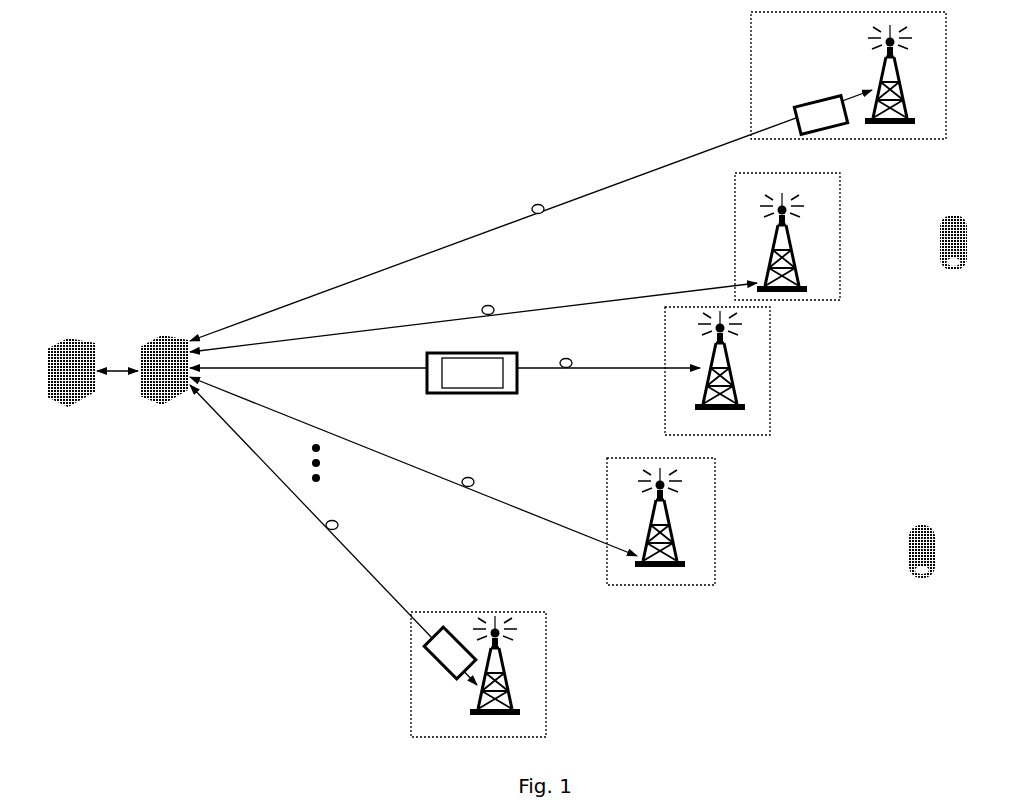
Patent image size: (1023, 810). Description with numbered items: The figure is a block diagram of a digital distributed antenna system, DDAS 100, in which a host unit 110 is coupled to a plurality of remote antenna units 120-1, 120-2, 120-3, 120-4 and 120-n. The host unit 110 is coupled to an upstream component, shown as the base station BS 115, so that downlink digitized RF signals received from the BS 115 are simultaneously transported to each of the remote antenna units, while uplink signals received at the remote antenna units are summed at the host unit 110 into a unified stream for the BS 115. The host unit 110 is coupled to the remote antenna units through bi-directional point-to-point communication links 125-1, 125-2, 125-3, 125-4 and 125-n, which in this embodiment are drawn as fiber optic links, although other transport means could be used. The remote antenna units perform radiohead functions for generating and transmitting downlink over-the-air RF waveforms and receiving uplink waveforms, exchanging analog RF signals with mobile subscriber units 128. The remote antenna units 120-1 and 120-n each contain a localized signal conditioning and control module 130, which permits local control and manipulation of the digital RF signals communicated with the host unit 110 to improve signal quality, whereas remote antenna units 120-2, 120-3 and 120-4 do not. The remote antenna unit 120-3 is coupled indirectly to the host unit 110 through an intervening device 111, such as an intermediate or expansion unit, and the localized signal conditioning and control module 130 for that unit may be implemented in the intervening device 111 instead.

The DDAS 100 is at (115, 200).
The host unit 110 is at (169, 338).
The intervening device 111 is at (473, 394).
The BS 115 is at (78, 338).
The remote antenna unit 120-1 is at (750, 73).
The remote antenna unit 120-2 is at (843, 238).
The remote antenna unit 120-3 is at (772, 368).
The remote antenna unit 120-4 is at (718, 520).
The remote antenna unit 120-n is at (411, 675).
The communication link 125-1 is at (413, 259).
The communication link 125-2 is at (462, 318).
The communication link 125-3 is at (617, 367).
The communication link 125-4 is at (425, 470).
The communication link 125-n is at (357, 558).
The mobile subscriber unit 128 is at (966, 248).
The localized signal conditioning and control module 130 is at (797, 108).